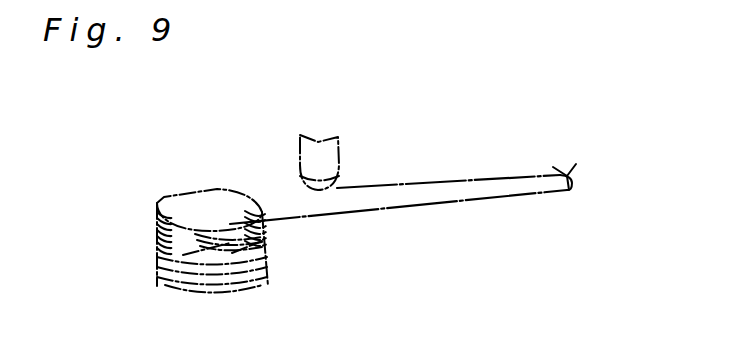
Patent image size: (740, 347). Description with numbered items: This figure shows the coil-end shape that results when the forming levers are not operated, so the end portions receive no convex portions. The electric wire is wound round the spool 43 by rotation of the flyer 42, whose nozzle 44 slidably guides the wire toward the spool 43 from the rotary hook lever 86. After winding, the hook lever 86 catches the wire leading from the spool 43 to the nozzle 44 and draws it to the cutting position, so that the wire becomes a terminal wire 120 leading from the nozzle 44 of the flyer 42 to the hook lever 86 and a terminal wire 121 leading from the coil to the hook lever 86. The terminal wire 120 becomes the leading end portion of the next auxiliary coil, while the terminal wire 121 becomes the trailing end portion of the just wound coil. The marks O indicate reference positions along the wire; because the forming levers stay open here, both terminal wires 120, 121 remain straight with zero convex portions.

The spool 43 is at (208, 297).
The flyer 42 is at (333, 160).
The nozzle 44 is at (302, 186).
The terminal wire 120 is at (441, 183).
The terminal wire 121 is at (398, 208).
The hook lever 86 is at (570, 174).
The reference point O is at (518, 176).